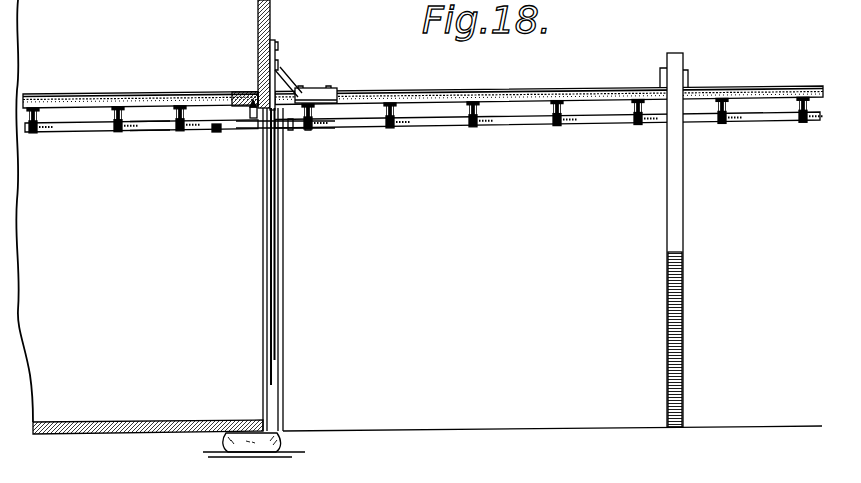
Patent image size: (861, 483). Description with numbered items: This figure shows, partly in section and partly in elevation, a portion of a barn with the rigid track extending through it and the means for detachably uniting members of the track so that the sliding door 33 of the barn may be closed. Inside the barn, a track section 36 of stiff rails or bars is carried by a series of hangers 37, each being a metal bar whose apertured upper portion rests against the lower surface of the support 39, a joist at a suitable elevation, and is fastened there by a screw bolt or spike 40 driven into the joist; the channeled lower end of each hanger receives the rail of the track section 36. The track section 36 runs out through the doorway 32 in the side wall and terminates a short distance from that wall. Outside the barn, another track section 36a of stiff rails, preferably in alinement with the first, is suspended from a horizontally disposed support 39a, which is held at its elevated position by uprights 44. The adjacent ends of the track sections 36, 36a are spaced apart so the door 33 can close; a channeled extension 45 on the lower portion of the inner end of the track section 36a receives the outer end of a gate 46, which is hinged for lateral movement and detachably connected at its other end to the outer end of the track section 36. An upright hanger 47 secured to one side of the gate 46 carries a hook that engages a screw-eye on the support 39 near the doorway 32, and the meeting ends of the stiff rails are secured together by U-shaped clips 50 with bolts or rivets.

The doorway 32 is at (263, 291).
The door 33 is at (283, 292).
The track section 36 is at (81, 133).
The track section 36a is at (510, 122).
The hanger 37 is at (115, 113).
The support 39 is at (145, 96).
The support 39a is at (500, 90).
The screw bolt or spike 40 is at (237, 99).
The upright 44 is at (667, 200).
The channeled extension 45 is at (148, 427).
The gate 46 is at (232, 133).
The upright hanger 47 is at (250, 114).
The U-shaped clip 50 is at (152, 132).